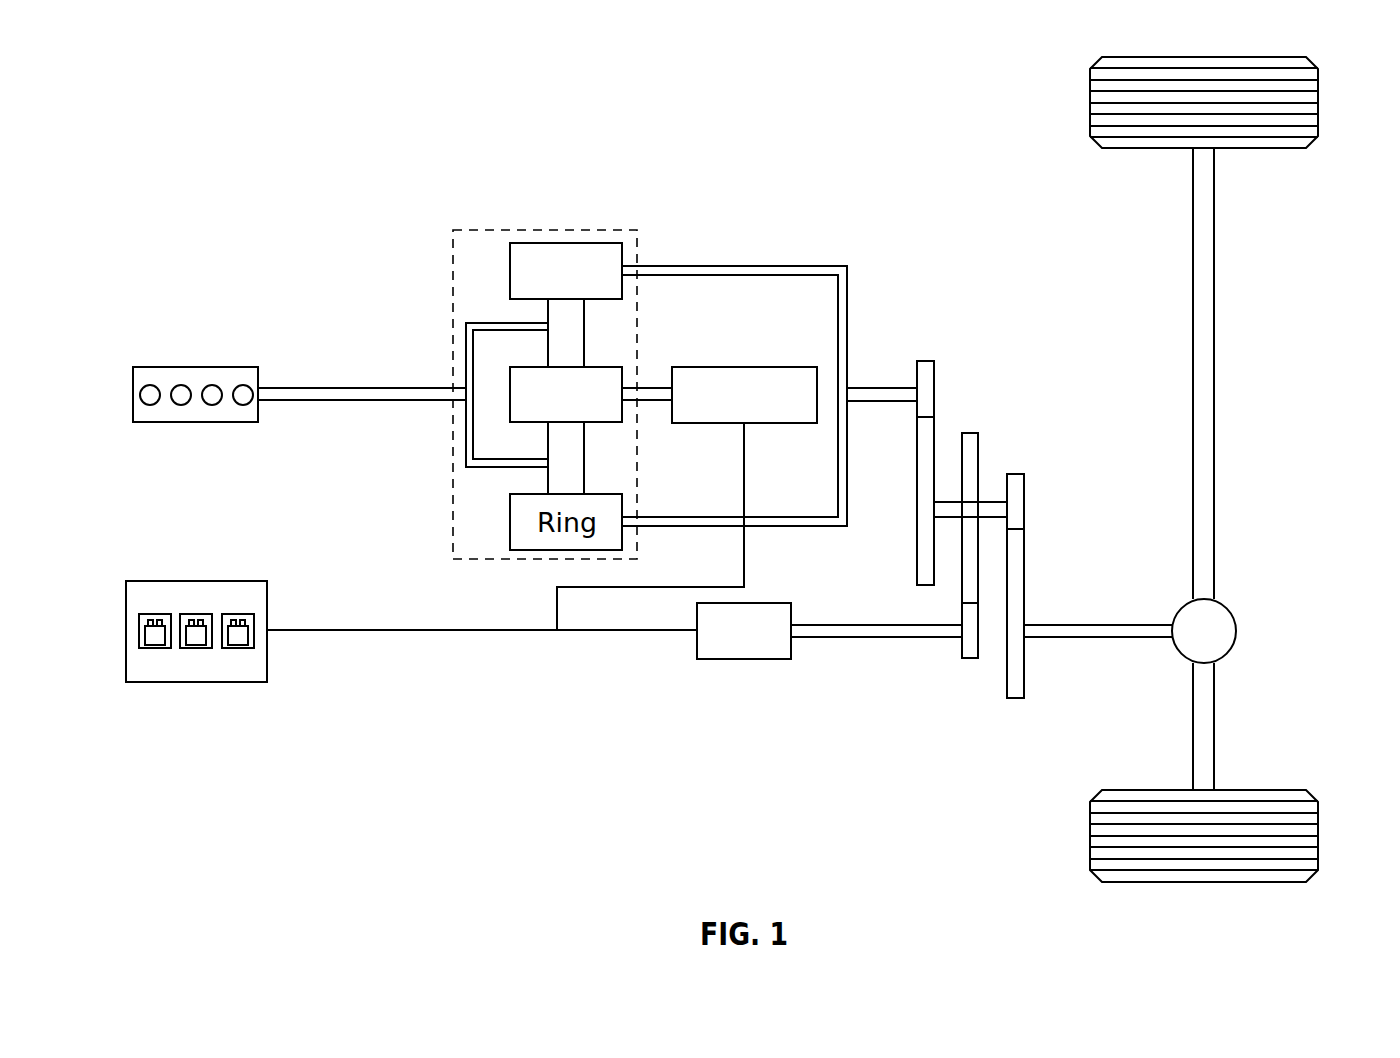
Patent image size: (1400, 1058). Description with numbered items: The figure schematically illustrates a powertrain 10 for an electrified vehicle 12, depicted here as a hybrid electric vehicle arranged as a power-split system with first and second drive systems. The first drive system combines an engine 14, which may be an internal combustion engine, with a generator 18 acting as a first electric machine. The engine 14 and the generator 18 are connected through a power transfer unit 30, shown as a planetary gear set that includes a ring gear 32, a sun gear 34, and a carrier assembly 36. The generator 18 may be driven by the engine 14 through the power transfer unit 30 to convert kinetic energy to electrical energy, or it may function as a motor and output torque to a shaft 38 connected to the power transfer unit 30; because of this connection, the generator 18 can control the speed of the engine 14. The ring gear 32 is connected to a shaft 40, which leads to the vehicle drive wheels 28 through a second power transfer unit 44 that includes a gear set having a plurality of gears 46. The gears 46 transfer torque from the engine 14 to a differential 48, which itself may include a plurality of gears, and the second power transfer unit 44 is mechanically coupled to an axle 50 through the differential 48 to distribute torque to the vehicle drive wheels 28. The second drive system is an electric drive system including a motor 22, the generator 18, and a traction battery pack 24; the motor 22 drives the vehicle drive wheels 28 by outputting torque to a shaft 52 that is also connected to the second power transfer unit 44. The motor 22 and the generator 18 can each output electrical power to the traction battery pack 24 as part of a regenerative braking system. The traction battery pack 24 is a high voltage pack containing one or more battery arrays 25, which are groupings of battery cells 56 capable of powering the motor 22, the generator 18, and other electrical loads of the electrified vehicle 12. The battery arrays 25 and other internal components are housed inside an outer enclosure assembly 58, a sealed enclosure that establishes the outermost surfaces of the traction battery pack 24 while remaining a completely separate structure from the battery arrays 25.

The powertrain 10 is at (252, 170).
The electrified vehicle 12 is at (757, 216).
The engine 14 is at (194, 422).
The generator 18 is at (760, 367).
The motor 22 is at (742, 660).
The traction battery pack 24 is at (126, 670).
The battery array 25 is at (139, 628).
The vehicle drive wheels 28 is at (1318, 98).
The power transfer unit 30 is at (523, 226).
The ring gear 32 is at (568, 243).
The sun gear 34 is at (540, 367).
The carrier assembly 36 is at (466, 432).
The shaft 38 is at (648, 387).
The shaft 40 is at (892, 403).
The second power transfer unit 44 is at (1041, 320).
The gears 46 is at (927, 361).
The differential 48 is at (1236, 632).
The axle 50 is at (1215, 405).
The shaft 52 is at (896, 638).
The battery cells 56 is at (153, 648).
The outer enclosure assembly 58 is at (126, 593).